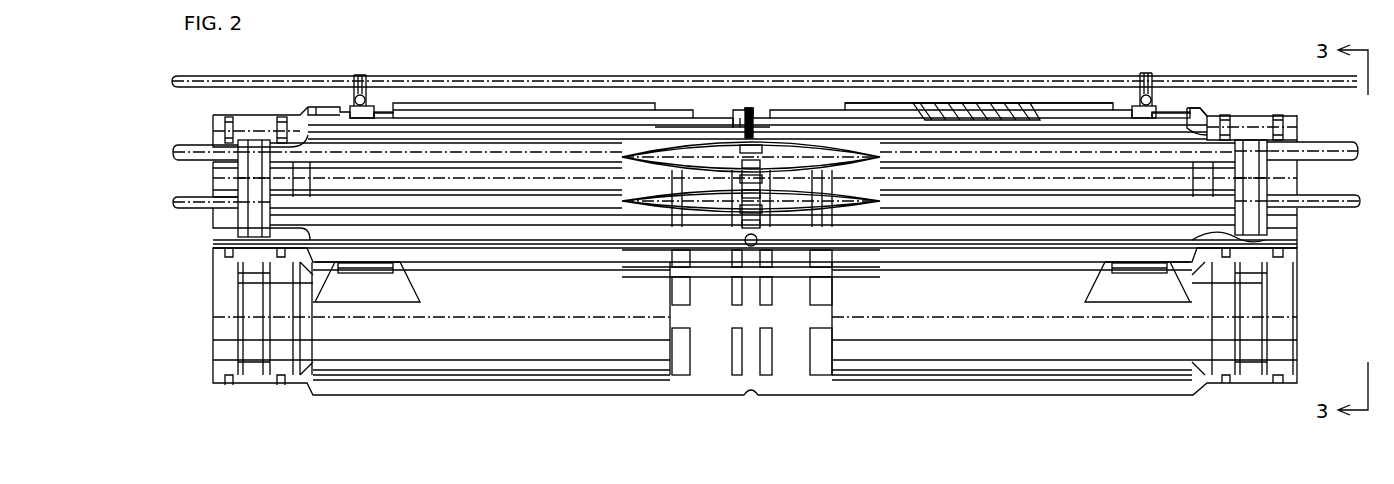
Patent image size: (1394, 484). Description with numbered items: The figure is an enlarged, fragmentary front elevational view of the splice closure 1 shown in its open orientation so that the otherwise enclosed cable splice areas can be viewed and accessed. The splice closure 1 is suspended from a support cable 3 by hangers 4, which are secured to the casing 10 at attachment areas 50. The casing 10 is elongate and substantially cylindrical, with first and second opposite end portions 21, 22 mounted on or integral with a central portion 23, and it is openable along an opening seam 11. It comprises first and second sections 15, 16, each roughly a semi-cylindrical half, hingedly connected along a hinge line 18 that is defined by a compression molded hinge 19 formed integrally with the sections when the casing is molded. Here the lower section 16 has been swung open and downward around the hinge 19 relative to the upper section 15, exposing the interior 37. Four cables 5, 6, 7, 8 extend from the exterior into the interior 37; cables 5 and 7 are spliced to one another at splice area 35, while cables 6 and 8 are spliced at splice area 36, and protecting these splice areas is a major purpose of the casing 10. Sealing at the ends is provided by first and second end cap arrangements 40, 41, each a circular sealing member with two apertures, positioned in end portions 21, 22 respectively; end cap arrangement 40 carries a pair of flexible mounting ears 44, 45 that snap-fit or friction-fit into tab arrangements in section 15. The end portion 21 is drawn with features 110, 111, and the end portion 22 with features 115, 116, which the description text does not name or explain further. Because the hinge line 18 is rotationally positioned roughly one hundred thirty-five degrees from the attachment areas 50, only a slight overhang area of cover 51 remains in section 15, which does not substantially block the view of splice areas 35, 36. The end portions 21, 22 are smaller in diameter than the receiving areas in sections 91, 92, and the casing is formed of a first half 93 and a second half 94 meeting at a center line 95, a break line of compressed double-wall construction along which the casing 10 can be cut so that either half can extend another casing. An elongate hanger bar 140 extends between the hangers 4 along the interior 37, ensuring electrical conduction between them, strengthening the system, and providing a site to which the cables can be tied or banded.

The splice closure 1 is at (805, 404).
The support cable 3 is at (900, 100).
The hangers 4 is at (361, 75).
The cable 5 is at (202, 145).
The cable 6 is at (205, 211).
The cable 7 is at (1322, 143).
The cable 8 is at (1345, 196).
The casing 10 is at (876, 105).
The opening seam 11 is at (468, 103).
The first section 15 is at (616, 110).
The second section 16 is at (601, 396).
The hinge line 18 is at (225, 243).
The compression molded hinge 19 is at (1258, 245).
The first end portion 21 is at (255, 116).
The second end portion 22 is at (1250, 114).
The central portion 23 is at (783, 108).
The splice area 35 is at (735, 114).
The splice area 36 is at (852, 189).
The interior 37 is at (465, 178).
The first end cap arrangement 40 is at (254, 188).
The second end cap arrangement 41 is at (1255, 187).
The mounting ear 44 is at (215, 178).
The mounting ear 45 is at (290, 178).
The attachment areas 50 is at (376, 110).
The overhang area of cover 51 is at (331, 108).
The section 91 is at (470, 340).
The section 92 is at (945, 340).
The first section (half) 93 is at (540, 103).
The second section (half) 94 is at (1068, 105).
The center line 95 is at (752, 108).
The slot 110 is at (227, 117).
The slot 111 is at (277, 117).
The slot 115 is at (1223, 114).
The slot 116 is at (1277, 112).
The hanger bar 140 is at (960, 135).